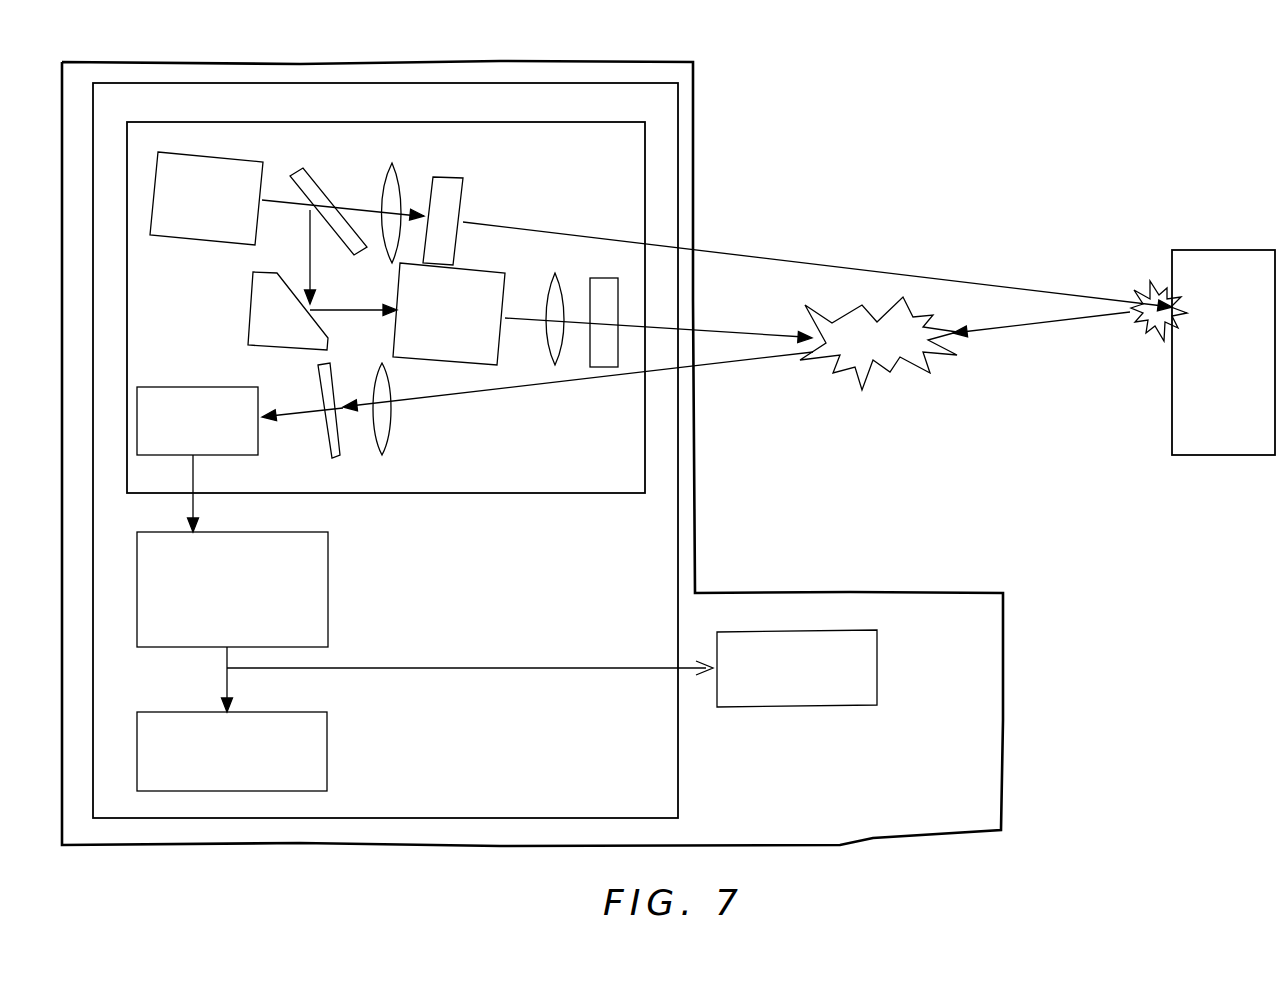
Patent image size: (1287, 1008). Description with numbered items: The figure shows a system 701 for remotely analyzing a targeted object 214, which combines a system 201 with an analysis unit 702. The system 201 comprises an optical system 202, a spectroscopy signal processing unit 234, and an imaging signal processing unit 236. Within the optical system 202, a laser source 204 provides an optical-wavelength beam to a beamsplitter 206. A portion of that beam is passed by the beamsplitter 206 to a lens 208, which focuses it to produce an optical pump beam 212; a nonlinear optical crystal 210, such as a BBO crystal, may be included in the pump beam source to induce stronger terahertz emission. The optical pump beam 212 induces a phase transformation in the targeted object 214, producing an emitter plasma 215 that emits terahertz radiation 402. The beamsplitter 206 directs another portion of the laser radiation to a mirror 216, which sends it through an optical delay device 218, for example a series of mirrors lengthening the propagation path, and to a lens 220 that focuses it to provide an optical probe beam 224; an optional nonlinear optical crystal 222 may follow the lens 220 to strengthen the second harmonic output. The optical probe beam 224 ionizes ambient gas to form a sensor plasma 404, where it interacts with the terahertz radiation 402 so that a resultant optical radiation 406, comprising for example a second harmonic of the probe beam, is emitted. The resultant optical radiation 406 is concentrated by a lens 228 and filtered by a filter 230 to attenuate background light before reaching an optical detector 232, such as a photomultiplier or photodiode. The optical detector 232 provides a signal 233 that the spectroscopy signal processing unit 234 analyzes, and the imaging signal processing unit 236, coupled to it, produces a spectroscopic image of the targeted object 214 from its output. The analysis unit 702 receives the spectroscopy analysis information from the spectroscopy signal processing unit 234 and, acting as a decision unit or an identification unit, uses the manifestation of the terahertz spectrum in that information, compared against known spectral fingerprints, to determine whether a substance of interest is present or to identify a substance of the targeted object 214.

The system 201 is at (678, 97).
The optical system 202 is at (532, 122).
The laser source 204 is at (192, 150).
The beamsplitter 206 is at (317, 165).
The lens 208 is at (403, 172).
The nonlinear optical crystal 210 is at (463, 187).
The optical pump beam 212 is at (783, 260).
The targeted object 214 is at (1210, 250).
The emitter plasma 215 is at (1148, 285).
The mirror 216 is at (255, 302).
The optical delay device 218 is at (477, 268).
The lens 220 is at (570, 275).
The nonlinear optical crystal 222 is at (618, 282).
The optical probe beam 224 is at (710, 332).
The lens 228 is at (392, 438).
The filter 230 is at (340, 448).
The optical detector 232 is at (192, 387).
The signal 233 is at (196, 507).
The spectroscopy signal processing unit 234 is at (328, 580).
The imaging signal processing unit 236 is at (327, 737).
The terahertz radiation 402 is at (1058, 322).
The sensor plasma 404 is at (890, 375).
The resultant optical radiation 406 is at (715, 367).
The system 701 is at (1003, 620).
The analysis unit 702 is at (877, 662).